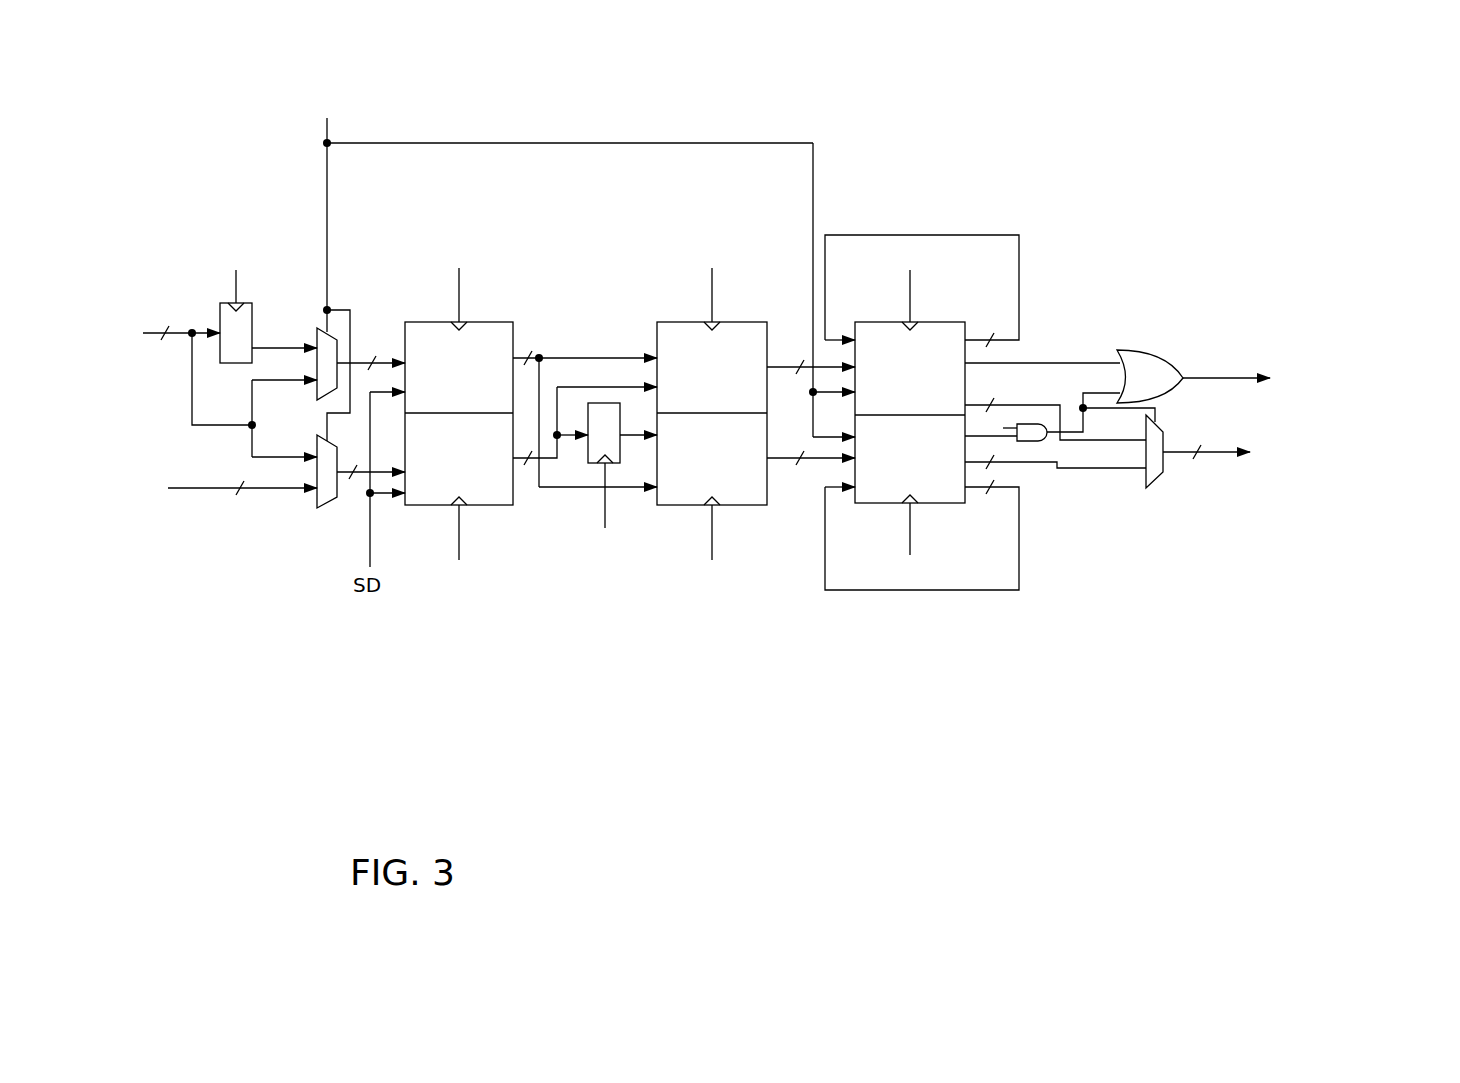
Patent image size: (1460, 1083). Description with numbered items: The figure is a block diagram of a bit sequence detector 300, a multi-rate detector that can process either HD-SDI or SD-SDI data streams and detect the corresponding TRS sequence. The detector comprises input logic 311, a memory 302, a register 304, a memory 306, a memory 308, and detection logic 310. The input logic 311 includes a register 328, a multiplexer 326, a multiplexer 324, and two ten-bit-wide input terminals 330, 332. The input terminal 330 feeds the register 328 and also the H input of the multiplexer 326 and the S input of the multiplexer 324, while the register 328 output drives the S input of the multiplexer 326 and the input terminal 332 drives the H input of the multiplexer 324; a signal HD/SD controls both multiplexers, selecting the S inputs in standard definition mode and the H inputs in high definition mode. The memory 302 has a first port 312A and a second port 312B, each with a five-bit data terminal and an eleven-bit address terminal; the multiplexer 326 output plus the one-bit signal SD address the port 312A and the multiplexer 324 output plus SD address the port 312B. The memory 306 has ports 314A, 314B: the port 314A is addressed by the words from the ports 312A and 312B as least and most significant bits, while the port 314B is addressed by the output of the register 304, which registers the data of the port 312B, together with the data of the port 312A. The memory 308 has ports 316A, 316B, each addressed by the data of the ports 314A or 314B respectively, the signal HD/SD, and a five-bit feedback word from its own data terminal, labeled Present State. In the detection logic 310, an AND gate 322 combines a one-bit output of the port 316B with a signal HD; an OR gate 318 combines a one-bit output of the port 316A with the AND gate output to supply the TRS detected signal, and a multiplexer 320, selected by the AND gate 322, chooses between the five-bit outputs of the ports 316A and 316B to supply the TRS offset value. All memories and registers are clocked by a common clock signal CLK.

The bit sequence detector 300 is at (1058, 787).
The memory 302 is at (488, 322).
The register 304 is at (593, 458).
The memory 306 is at (665, 323).
The memory 308 is at (877, 322).
The detection logic 310 is at (1178, 266).
The input logic 311 is at (244, 136).
The first port 312A is at (505, 335).
The second port 312B is at (493, 495).
The first port 314A is at (750, 335).
The second port 314B is at (673, 495).
The first port 316A is at (868, 340).
The second port 316B is at (873, 495).
The OR gate 318 is at (1150, 352).
The multiplexer 320 is at (1156, 489).
The AND gate 322 is at (1047, 441).
The multiplexer 324 is at (327, 509).
The multiplexer 326 is at (323, 327).
The register 328 is at (253, 303).
The input terminal 330 is at (187, 322).
The input terminal 332 is at (263, 490).